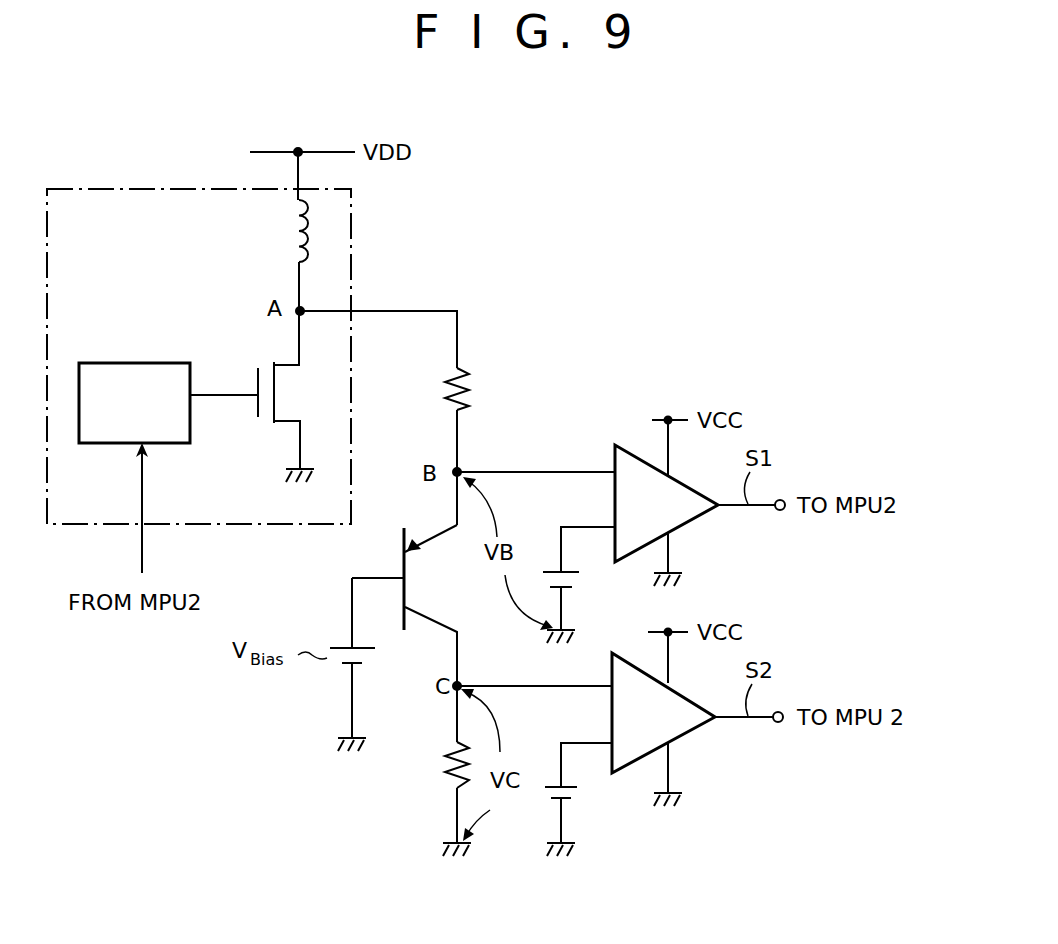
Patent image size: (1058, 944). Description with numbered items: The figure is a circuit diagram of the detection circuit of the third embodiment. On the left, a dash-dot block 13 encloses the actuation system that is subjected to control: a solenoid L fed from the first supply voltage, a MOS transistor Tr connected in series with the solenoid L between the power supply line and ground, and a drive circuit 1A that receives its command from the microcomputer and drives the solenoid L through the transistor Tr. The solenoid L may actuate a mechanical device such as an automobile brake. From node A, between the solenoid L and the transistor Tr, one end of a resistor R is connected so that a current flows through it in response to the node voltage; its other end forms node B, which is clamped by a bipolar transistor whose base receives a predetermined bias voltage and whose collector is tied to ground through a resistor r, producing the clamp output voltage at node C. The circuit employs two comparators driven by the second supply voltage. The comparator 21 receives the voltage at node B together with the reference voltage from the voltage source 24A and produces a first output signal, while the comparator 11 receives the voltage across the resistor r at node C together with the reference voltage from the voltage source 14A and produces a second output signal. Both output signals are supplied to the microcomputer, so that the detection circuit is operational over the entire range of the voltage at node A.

The oscillation circuit block 13 is at (90, 188).
The drive circuit 1A is at (133, 363).
The comparator 21 is at (615, 445).
The reference voltage source 24A is at (580, 582).
The comparator 11 is at (631, 660).
The voltage source 14A is at (578, 792).
The solenoid L is at (314, 238).
The MOS transistor Tr is at (263, 423).
The resistor R is at (445, 389).
The resistor r is at (447, 765).